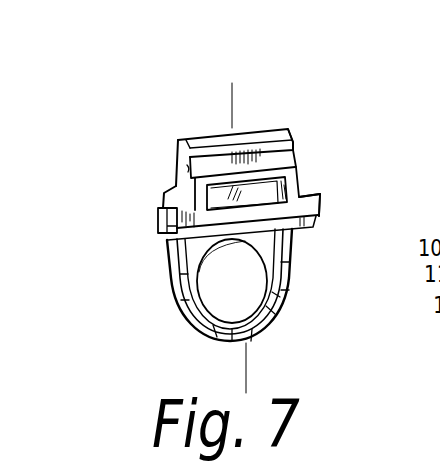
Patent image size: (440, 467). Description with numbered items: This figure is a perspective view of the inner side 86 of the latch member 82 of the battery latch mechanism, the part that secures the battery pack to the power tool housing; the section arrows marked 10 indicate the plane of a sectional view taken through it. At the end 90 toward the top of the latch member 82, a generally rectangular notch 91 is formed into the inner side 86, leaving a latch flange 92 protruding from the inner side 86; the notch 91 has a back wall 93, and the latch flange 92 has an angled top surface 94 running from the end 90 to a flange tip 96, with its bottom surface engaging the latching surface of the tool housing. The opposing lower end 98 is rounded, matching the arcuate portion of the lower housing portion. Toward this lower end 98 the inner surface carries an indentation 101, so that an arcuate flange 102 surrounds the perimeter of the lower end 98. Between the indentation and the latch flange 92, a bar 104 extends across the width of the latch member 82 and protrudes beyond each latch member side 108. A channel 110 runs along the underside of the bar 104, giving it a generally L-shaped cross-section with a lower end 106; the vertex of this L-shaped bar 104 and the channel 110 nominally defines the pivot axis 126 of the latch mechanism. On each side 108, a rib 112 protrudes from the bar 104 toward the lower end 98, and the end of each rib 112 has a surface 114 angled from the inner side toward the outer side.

The section line 10 is at (231, 97).
The latch member 82 is at (162, 113).
The inner side 86 is at (176, 187).
The end 90 is at (242, 131).
The notch 91 is at (279, 156).
The latch flange 92 is at (178, 142).
The back wall 93 is at (187, 169).
The angled top surface 94 is at (276, 131).
The flange tip 96 is at (281, 143).
The lower end 98 is at (243, 342).
The indentation 101 is at (243, 300).
The arcuate flange 102 is at (213, 328).
The bar 104 is at (306, 197).
The lower end 106 is at (305, 228).
The latch member side 108 is at (186, 316).
The channel 110 is at (310, 220).
The rib 112 is at (175, 258).
The surface 114 is at (181, 286).
The pivot axis 126 is at (160, 227).